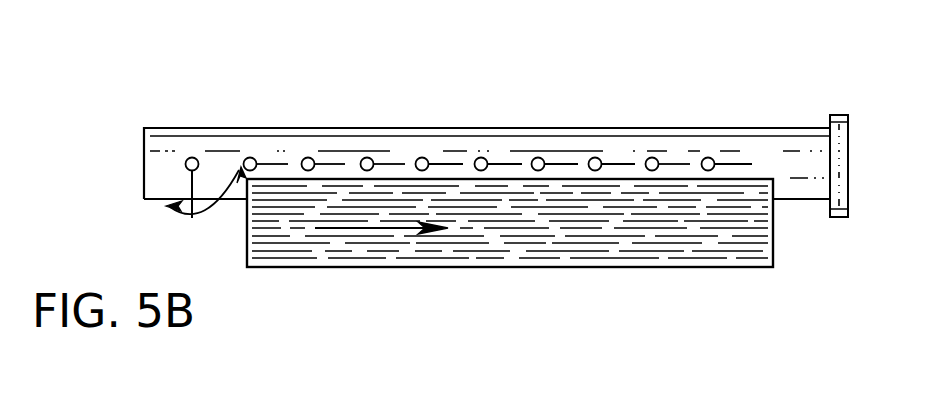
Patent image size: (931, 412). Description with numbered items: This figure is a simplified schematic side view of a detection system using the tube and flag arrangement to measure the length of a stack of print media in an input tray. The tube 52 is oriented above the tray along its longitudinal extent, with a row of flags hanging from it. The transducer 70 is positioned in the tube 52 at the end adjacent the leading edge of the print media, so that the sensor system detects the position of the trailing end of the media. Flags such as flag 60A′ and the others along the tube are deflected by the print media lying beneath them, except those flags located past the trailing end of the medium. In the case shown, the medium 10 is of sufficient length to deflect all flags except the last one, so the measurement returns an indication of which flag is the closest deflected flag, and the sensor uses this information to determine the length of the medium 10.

The belt guide bar 52 is at (443, 128).
The medium 10 is at (257, 252).
The transducer 70 is at (840, 115).
The flag 60A′ is at (738, 166).